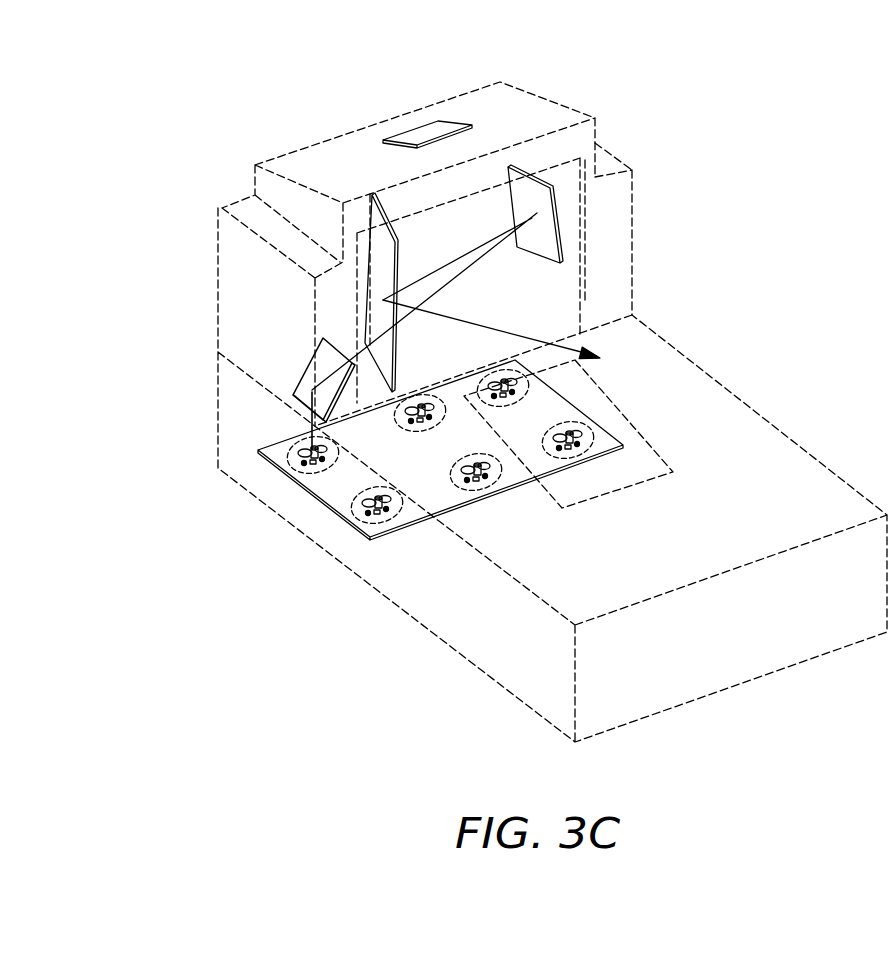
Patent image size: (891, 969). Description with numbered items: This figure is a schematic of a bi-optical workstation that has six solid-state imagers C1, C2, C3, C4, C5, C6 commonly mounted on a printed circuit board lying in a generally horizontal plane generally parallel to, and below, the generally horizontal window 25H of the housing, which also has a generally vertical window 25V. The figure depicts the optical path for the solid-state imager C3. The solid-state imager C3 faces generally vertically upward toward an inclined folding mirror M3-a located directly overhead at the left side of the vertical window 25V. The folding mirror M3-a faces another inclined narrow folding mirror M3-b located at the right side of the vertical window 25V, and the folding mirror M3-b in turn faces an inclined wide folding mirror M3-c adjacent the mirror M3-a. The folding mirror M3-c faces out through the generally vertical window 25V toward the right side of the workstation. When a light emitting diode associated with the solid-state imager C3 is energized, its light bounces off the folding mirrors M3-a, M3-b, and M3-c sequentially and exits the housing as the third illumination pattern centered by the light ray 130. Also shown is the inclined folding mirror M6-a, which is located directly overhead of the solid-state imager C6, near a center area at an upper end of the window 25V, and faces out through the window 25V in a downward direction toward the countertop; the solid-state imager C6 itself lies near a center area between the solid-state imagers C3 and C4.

The inclined folding mirror M6-a is at (413, 131).
The generally vertical window 25V is at (568, 203).
The inclined narrow folding mirror M3-b is at (547, 243).
The inclined wide folding mirror M3-c is at (378, 263).
The solid-state imager C6 is at (410, 412).
The light ray 130 is at (517, 333).
The inclined folding mirror M3-a is at (322, 360).
The solid-state imager C4 is at (525, 382).
The solid-state imager C3 is at (303, 447).
The solid-state imager C2 is at (592, 438).
The generally horizontal window 25H is at (633, 458).
The solid-state imager C1 is at (360, 510).
The solid-state imager C5 is at (470, 485).